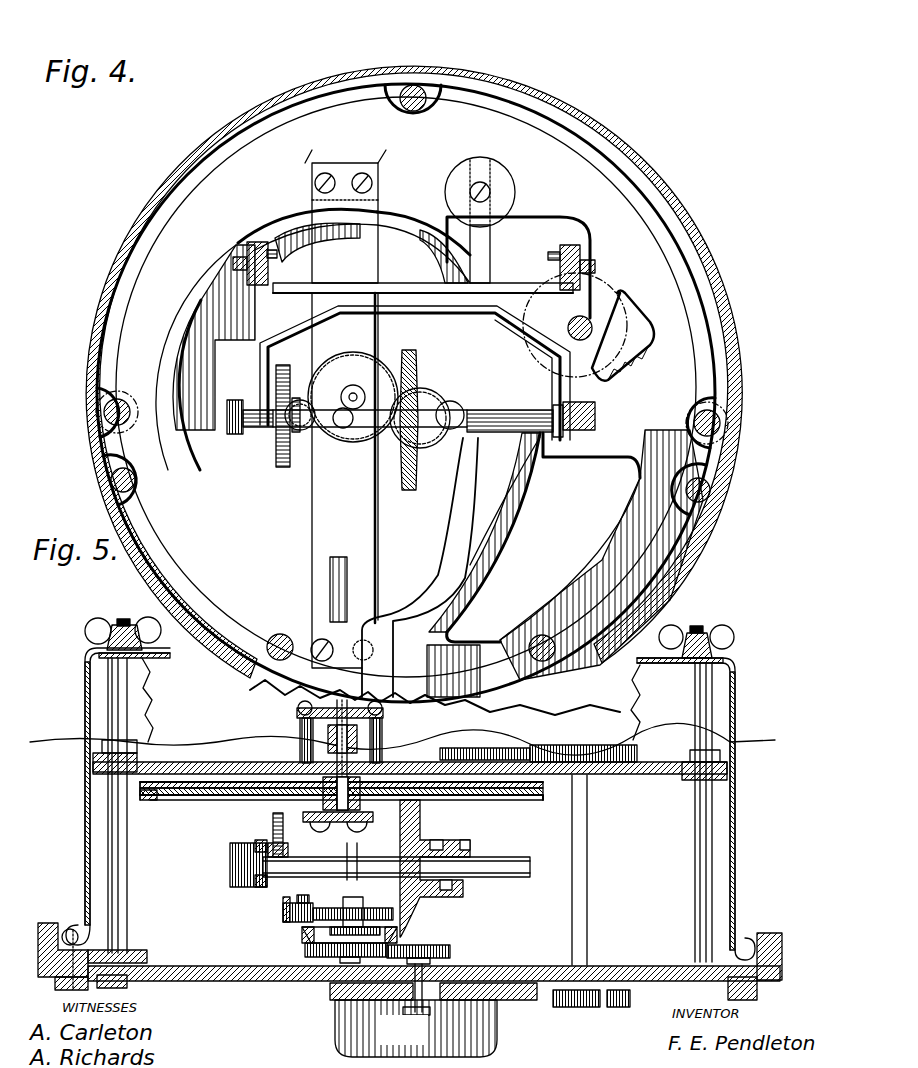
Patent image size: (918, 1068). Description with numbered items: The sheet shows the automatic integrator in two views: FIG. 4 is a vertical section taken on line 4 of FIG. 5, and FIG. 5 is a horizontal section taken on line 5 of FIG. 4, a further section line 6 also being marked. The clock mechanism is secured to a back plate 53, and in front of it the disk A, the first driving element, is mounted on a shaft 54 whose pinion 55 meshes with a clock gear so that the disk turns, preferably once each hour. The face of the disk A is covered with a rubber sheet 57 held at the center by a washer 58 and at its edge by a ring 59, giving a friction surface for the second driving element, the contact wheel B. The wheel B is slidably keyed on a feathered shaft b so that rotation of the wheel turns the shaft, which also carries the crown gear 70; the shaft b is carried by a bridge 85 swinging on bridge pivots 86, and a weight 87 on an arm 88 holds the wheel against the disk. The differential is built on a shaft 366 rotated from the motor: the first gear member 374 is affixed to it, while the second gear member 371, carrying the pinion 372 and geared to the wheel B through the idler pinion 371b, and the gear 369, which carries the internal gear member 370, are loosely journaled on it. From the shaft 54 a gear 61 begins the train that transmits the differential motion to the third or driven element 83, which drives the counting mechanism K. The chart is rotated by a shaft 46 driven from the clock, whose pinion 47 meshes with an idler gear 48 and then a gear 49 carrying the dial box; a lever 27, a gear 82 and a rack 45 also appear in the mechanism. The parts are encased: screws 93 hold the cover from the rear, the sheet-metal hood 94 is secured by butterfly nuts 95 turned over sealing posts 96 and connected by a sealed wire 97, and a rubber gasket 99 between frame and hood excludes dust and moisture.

In FIG. 5, the section line 4— 4 is at (203, 965).
In FIG. 4, the section line 5— 5 is at (62, 410).
In FIG. 4, the section line 6- 6 is at (413, 68).
In FIG. 4, the lever arm 27 is at (463, 480).
In FIG. 4, the toothed rack segment 45 is at (625, 350).
In FIG. 5, the toothed rack segment 45 is at (590, 748).
In FIG. 4, the shaft 46 is at (587, 320).
In FIG. 5, the shaft 46 is at (585, 822).
In FIG. 5, the pinion 47 is at (562, 988).
In FIG. 5, the idler gear 48 is at (622, 990).
In FIG. 5, the gear 49 is at (300, 995).
In FIG. 4, the back plate 53 is at (412, 393).
In FIG. 5, the shaft 54 is at (332, 760).
In FIG. 5, the pinion 55 is at (325, 732).
In FIG. 4, the sheet of rubber 57 is at (203, 300).
In FIG. 5, the sheet of rubber 57 is at (541, 798).
In FIG. 5, the washer 58 is at (392, 786).
In FIG. 4, the ring 59 is at (178, 313).
In FIG. 5, the ring 59 is at (146, 800).
In FIG. 5, the gear 61 is at (368, 822).
In FIG. 4, the crown gear 70 is at (280, 380).
In FIG. 5, the crown gear 70 is at (283, 842).
In FIG. 4, the gear 82 is at (432, 396).
In FIG. 5, the gear 82 is at (435, 947).
In FIG. 5, the driven element shaft 83 is at (420, 990).
In FIG. 4, the bridge 85 is at (410, 292).
In FIG. 5, the bridge 85 is at (255, 850).
In FIG. 4, the bridge pivots 86 is at (270, 262).
In FIG. 4, the weight 87 is at (503, 192).
In FIG. 4, the arm 88 is at (490, 252).
In FIG. 5, the screws 93 is at (58, 985).
In FIG. 5, the hood 94 is at (85, 815).
In FIG. 5, the butterfly nuts 95 is at (95, 618).
In FIG. 4, the sealing post 96 is at (135, 487).
In FIG. 5, the sealing post 96 is at (110, 678).
In FIG. 5, the wire 97 is at (150, 630).
In FIG. 5, the rubber gasket 99 is at (70, 928).
In FIG. 4, the shaft 366 is at (353, 393).
In FIG. 5, the shaft 366 is at (350, 862).
In FIG. 4, the gear 369 is at (358, 430).
In FIG. 5, the gear 369 is at (305, 950).
In FIG. 5, the internal gear member 370 is at (412, 918).
In FIG. 5, the second gear member 371 is at (335, 907).
In FIG. 4, the idler pinion 371b is at (300, 428).
In FIG. 5, the idler pinion 371b is at (285, 912).
In FIG. 5, the pinion 372 is at (302, 932).
In FIG. 5, the first gear member 374 is at (368, 926).
In FIG. 4, the first driving element A is at (507, 483).
In FIG. 5, the first driving element A is at (215, 795).
In FIG. 4, the second driving element B is at (416, 356).
In FIG. 4, the shaft b is at (492, 410).
In FIG. 5, the shaft b is at (522, 868).
In FIG. 5, the counting mechanism K is at (416, 1028).